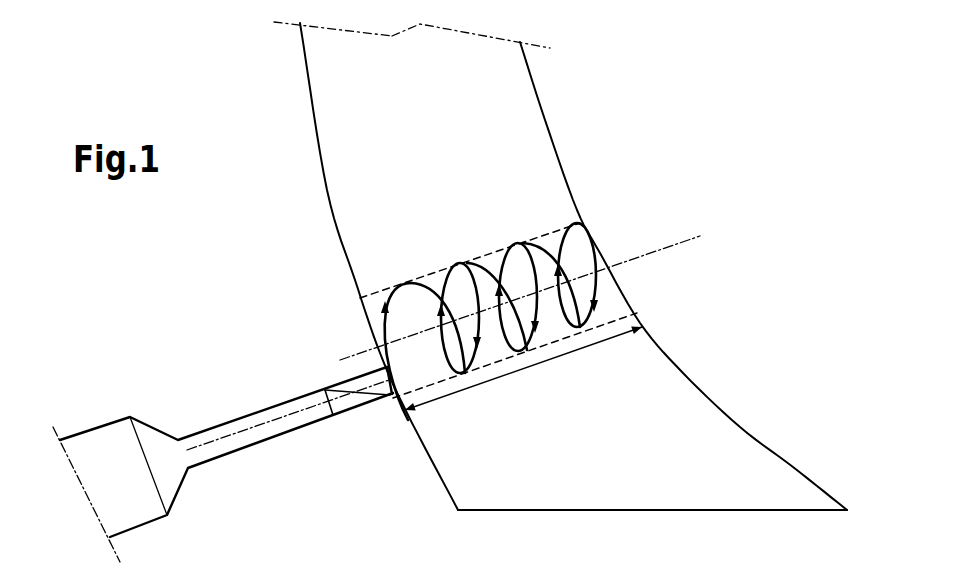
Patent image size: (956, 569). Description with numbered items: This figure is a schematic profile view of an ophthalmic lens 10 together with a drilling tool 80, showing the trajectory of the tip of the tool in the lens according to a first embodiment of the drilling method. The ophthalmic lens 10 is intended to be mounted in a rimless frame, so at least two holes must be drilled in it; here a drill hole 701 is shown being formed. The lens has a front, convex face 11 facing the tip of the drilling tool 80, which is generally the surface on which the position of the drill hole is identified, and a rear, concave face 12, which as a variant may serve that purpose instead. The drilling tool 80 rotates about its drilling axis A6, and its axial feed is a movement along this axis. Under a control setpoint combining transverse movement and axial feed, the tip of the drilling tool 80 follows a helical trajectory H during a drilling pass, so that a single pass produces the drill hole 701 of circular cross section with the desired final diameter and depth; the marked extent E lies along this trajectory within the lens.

The ophthalmic lens 10 is at (327, 93).
The front convex face 11 is at (327, 195).
The rear face 12 is at (550, 143).
The drill hole 701 is at (430, 276).
The drilling tool 80 is at (289, 396).
The drilling axis A6 is at (230, 437).
The extent of the treated zone E is at (513, 373).
The helical trajectory H is at (603, 284).